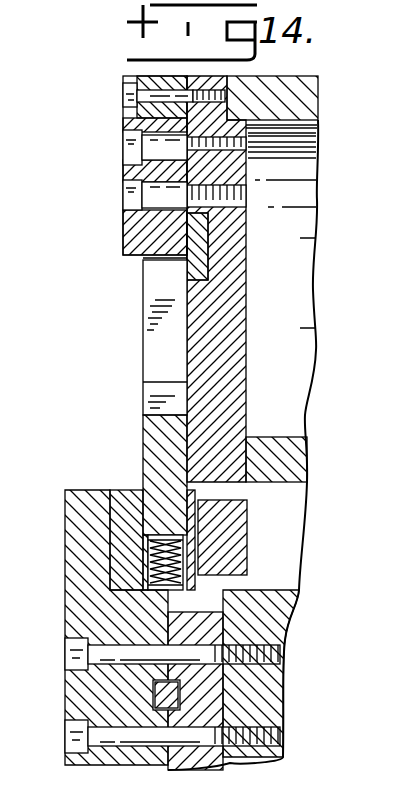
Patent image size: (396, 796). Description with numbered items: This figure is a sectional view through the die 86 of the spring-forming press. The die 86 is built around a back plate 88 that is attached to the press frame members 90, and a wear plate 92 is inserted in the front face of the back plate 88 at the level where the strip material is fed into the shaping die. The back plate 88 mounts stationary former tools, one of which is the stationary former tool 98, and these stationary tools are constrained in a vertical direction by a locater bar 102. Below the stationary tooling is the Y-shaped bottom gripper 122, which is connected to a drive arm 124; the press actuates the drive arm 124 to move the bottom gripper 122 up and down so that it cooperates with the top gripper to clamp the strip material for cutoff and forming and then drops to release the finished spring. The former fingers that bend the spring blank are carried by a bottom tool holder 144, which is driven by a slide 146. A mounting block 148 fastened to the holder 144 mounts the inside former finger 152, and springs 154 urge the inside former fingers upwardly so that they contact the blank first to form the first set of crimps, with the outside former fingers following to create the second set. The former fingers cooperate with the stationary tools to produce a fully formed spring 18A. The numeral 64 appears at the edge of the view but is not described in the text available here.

The spring 18A is at (162, 263).
The member 64 is at (11, 233).
The die 86 is at (130, 319).
The back plate 88 is at (240, 336).
The press frame members 90 is at (300, 80).
The wear plate 92 is at (205, 252).
The stationary former tool 98 is at (124, 172).
The locater bar 102 is at (125, 78).
The bottom gripper 122 is at (148, 350).
The drive arm 124 is at (247, 535).
The bottom tool holder 144 is at (72, 598).
The slide 146 is at (290, 635).
The mounting block 148 is at (123, 496).
The inside former finger 152 is at (150, 436).
The springs 154 is at (148, 558).